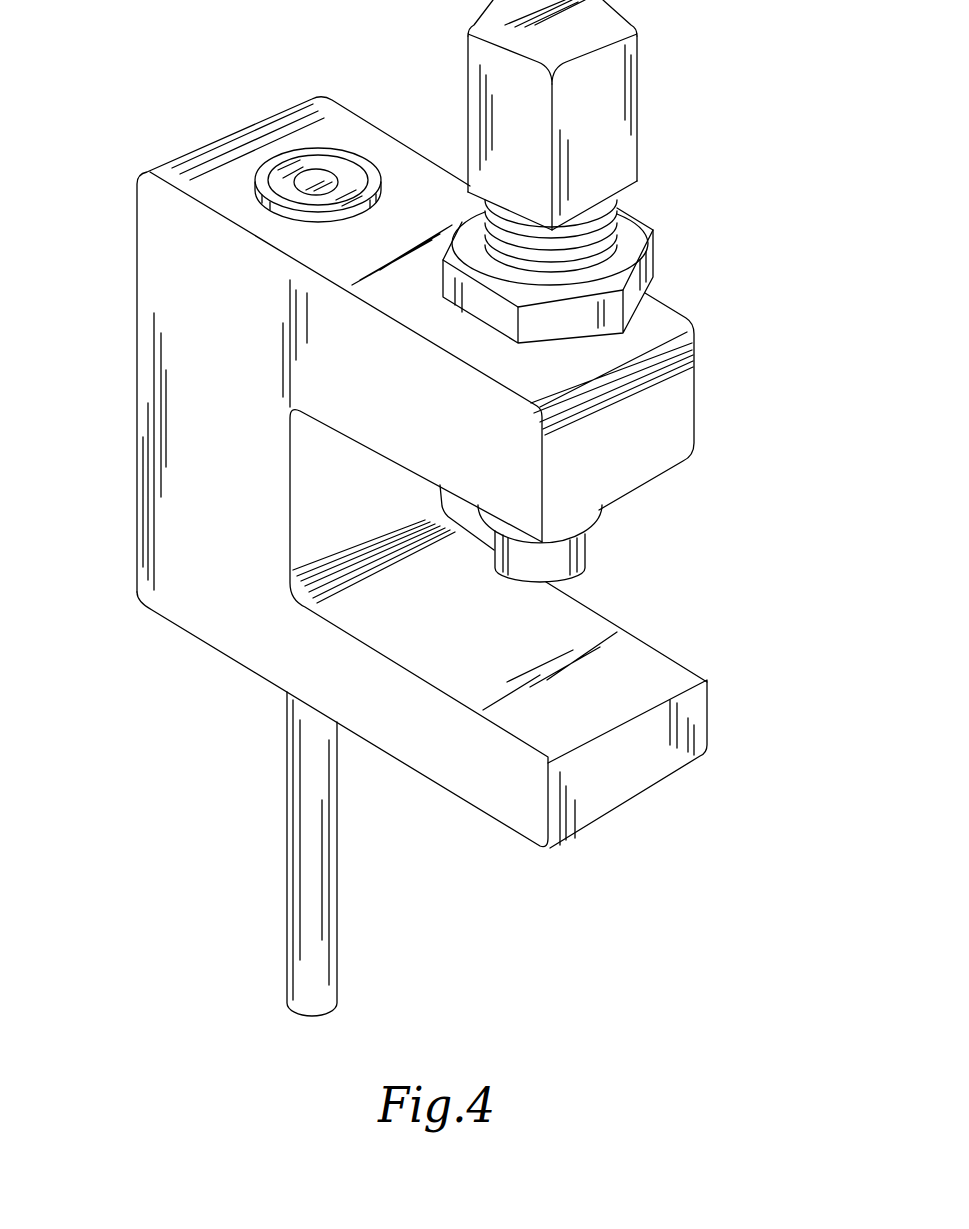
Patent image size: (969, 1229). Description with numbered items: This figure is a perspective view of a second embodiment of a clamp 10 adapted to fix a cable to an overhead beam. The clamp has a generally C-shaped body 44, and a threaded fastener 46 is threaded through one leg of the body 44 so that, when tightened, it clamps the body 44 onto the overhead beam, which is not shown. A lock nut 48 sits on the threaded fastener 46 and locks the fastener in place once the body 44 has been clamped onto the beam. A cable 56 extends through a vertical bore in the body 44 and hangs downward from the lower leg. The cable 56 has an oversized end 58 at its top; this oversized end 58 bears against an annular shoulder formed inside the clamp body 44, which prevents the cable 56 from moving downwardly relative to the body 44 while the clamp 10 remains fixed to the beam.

The clamp 10 is at (448, 508).
The body 44 is at (193, 450).
The threaded fastener 46 is at (610, 140).
The lock nut 48 is at (633, 290).
The cable 56 is at (310, 806).
The oversized end 58 is at (312, 165).